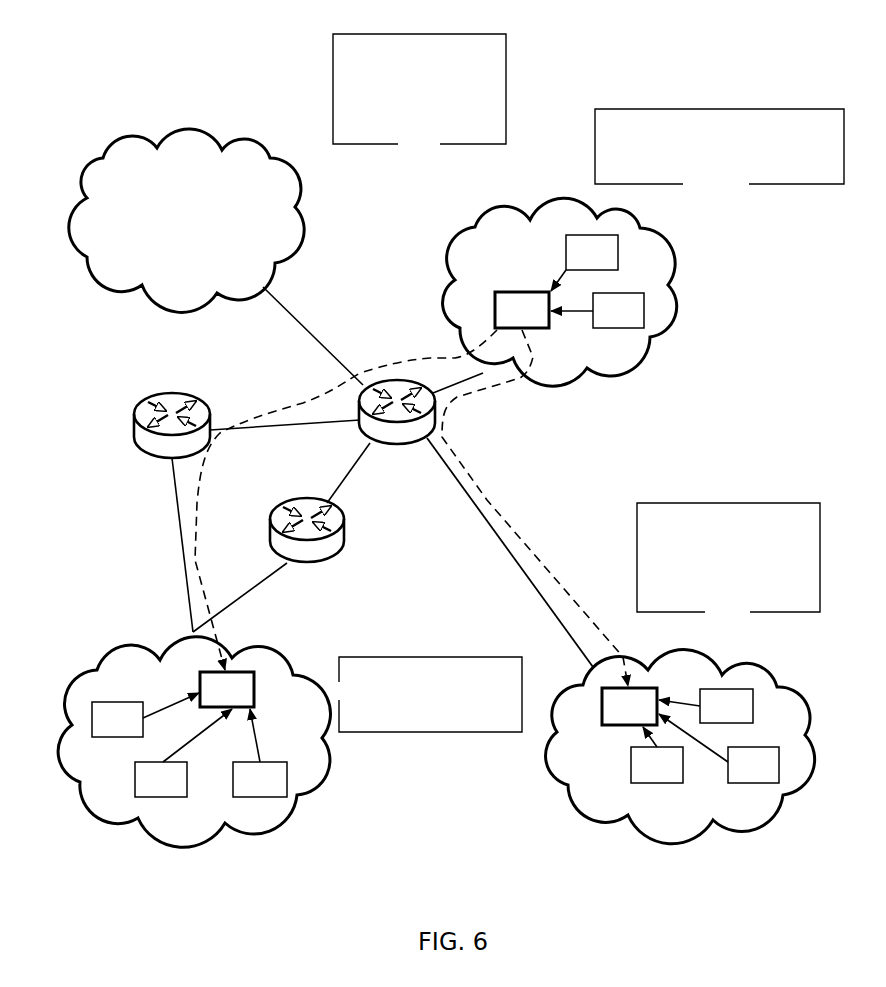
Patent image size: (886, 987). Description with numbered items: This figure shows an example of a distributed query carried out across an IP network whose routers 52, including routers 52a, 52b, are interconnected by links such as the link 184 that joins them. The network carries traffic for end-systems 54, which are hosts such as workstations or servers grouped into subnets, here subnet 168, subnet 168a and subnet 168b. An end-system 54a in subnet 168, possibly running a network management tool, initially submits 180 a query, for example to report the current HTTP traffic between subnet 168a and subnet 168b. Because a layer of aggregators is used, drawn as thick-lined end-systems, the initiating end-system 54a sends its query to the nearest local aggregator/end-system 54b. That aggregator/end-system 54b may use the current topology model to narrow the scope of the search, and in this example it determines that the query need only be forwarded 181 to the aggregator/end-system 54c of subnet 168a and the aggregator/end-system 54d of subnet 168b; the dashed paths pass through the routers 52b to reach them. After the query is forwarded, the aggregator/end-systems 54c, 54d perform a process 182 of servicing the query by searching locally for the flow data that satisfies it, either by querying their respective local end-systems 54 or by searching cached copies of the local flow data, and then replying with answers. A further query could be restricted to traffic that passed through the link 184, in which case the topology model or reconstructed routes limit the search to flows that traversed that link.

The router 52 is at (378, 553).
The router 52a is at (124, 418).
The router 52b is at (424, 470).
The end-system 54 is at (435, 743).
The initiating end-system 54a is at (578, 263).
The local aggregator/end-system 54b is at (508, 321).
The aggregator/end-system of subnet 168a 54c is at (213, 700).
The aggregator/end-system of subnet 168b 54d is at (615, 717).
The subnet 168 is at (726, 330).
The subnet 168a is at (214, 866).
The subnet 168b is at (705, 866).
The submitting a query 180 is at (749, 184).
The forwarding the query 181 is at (504, 302).
The servicing the query 182 is at (247, 690).
The link 184 is at (283, 428).